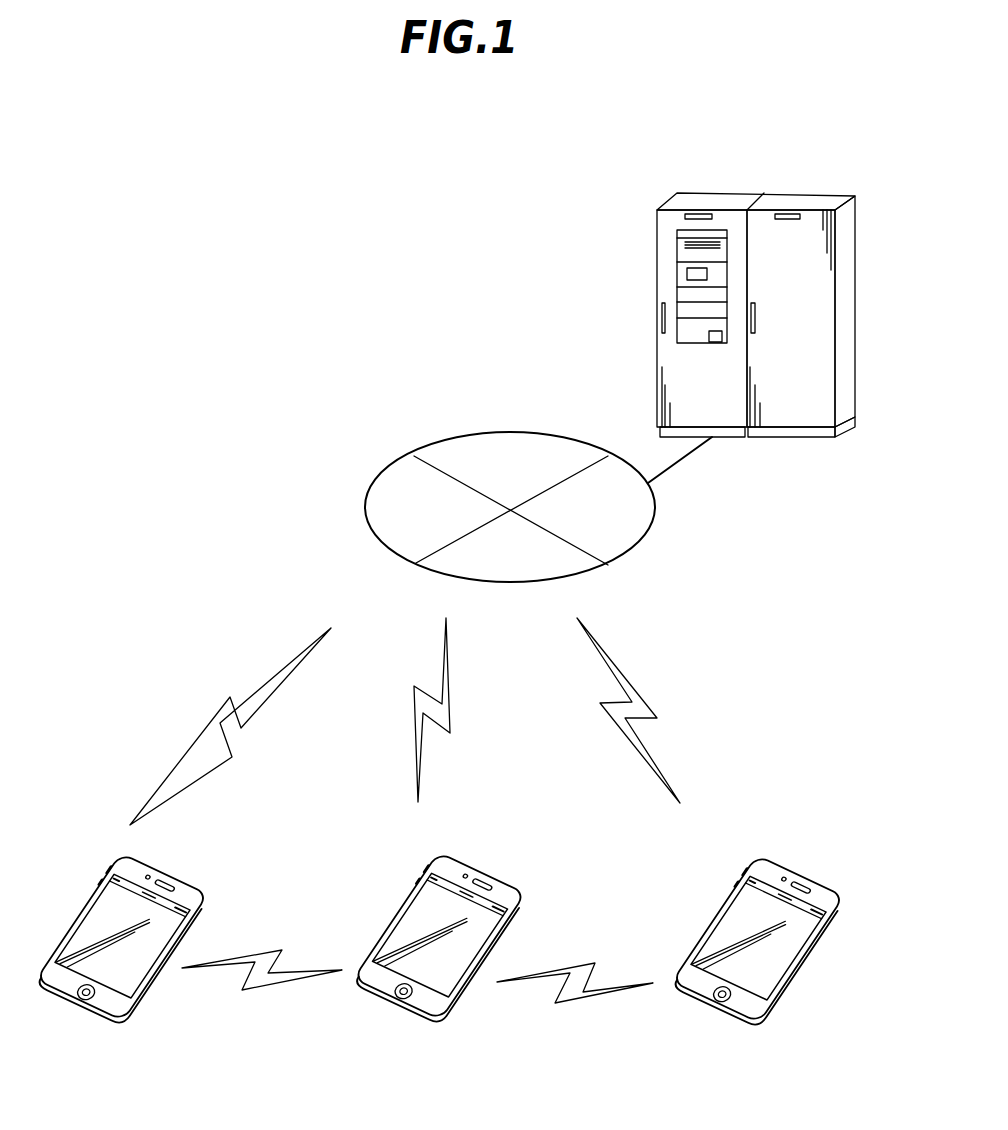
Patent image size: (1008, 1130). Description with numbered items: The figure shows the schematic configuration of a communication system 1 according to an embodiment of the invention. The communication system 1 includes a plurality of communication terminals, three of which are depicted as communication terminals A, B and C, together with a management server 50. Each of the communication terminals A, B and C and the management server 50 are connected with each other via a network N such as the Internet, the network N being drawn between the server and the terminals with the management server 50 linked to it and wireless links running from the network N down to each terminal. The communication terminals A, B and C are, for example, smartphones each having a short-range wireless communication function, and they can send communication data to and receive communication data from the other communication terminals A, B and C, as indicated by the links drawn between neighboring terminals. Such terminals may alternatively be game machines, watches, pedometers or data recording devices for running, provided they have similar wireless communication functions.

The communication system 1 is at (566, 184).
The management server 50 is at (803, 192).
The network N is at (400, 460).
The communication terminal A is at (435, 1032).
The communication terminal B is at (120, 1027).
The communication terminal C is at (748, 1033).